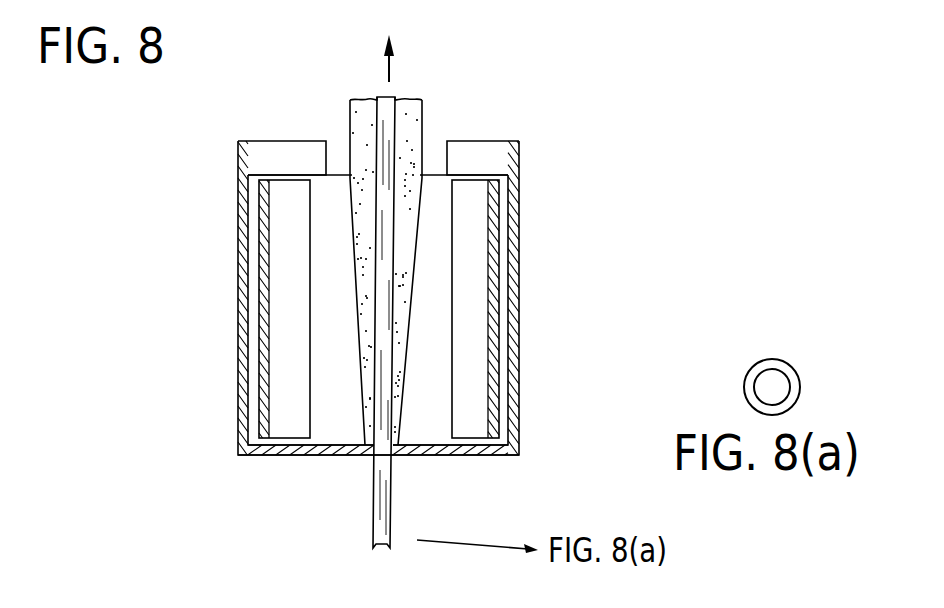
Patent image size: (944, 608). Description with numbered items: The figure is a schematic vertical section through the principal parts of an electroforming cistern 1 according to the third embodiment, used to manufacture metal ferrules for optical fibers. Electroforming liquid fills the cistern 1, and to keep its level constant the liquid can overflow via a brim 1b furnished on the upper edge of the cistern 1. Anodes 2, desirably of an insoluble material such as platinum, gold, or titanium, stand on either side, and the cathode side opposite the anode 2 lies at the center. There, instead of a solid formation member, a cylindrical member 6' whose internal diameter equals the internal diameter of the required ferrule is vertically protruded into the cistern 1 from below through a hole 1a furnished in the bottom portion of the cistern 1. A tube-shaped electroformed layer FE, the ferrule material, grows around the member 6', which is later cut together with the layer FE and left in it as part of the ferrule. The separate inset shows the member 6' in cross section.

In FIG. 8, the electroforming cistern 1 is at (520, 318).
In FIG. 8, the hole 1a is at (358, 452).
In FIG. 8, the brim 1b is at (521, 160).
In FIG. 8, the anode 2 is at (274, 392).
In FIG. 8, the tube-shaped electroformed layer FE is at (412, 117).
In FIG. 8, the cylindrical member 6' is at (418, 322).
In FIG. 8A, the cylindrical member 6' is at (809, 378).